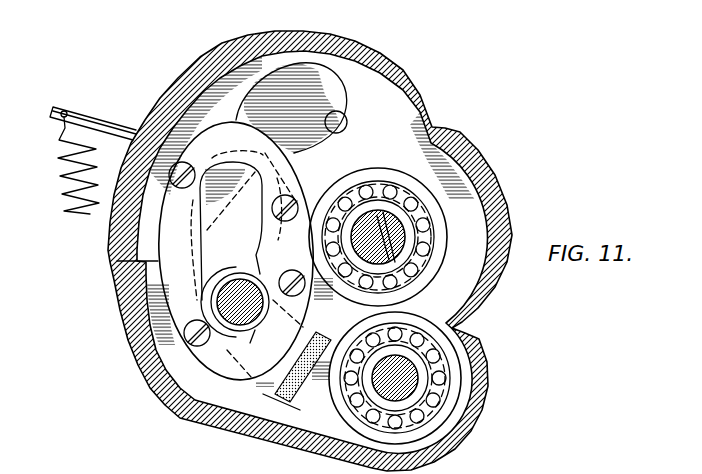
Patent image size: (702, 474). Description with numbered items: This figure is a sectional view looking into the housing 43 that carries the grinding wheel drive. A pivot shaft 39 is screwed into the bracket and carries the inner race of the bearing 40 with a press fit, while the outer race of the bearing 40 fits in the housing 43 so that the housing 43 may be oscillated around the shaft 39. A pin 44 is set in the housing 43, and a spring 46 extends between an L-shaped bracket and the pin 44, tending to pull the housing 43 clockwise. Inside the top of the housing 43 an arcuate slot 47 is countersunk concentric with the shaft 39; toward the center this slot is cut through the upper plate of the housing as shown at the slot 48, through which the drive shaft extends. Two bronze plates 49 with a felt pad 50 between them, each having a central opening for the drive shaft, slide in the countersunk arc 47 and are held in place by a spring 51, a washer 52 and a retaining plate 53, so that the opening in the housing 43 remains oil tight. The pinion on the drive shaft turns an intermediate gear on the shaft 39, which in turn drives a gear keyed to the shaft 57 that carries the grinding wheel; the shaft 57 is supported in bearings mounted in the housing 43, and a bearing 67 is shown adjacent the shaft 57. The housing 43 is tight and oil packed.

The pivot shaft 39 is at (400, 236).
The bearing 40 is at (432, 268).
The housing 43 is at (200, 52).
The pin 44 is at (84, 109).
The spring 46 is at (66, 198).
The arcuate slot 47 is at (340, 113).
The slot 48 is at (258, 213).
The bronze plates 49 is at (263, 394).
The felt pad 50 is at (312, 350).
The spring 51 is at (240, 270).
The washer 52 is at (224, 272).
The retaining plate 53 is at (117, 261).
The shaft 57 is at (410, 380).
The ball bearing 67 is at (448, 360).